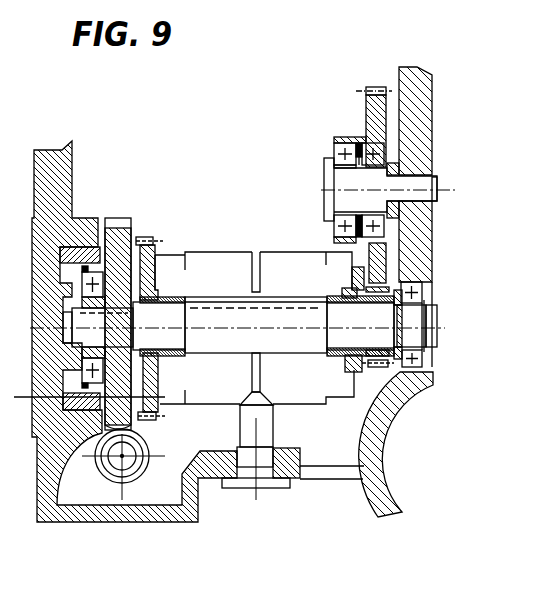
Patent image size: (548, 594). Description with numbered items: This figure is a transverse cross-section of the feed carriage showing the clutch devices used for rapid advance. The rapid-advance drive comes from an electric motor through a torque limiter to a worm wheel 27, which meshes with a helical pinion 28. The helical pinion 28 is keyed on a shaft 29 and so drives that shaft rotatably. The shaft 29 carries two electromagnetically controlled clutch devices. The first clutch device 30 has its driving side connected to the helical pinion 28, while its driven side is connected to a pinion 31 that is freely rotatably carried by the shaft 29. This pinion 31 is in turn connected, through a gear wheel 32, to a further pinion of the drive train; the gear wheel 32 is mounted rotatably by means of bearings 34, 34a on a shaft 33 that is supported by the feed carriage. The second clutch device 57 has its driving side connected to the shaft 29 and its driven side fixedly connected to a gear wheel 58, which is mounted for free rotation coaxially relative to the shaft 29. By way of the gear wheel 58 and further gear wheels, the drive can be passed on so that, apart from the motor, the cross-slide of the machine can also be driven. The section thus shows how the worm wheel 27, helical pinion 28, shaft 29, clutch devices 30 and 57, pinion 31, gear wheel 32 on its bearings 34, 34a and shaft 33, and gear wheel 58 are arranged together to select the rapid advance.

The worm wheel 27 is at (110, 476).
The helical pinion 28 is at (118, 228).
The shaft 29 is at (227, 338).
The electromagnetically controlled clutch device 30 is at (281, 272).
The pinion 31 is at (378, 368).
The gear wheel 32 is at (366, 107).
The shaft 33 is at (349, 180).
The bearing 34 is at (336, 152).
The bearing 34a is at (367, 141).
The electromagnetically controlled clutch device 57 is at (207, 268).
The gear wheel 58 is at (143, 237).